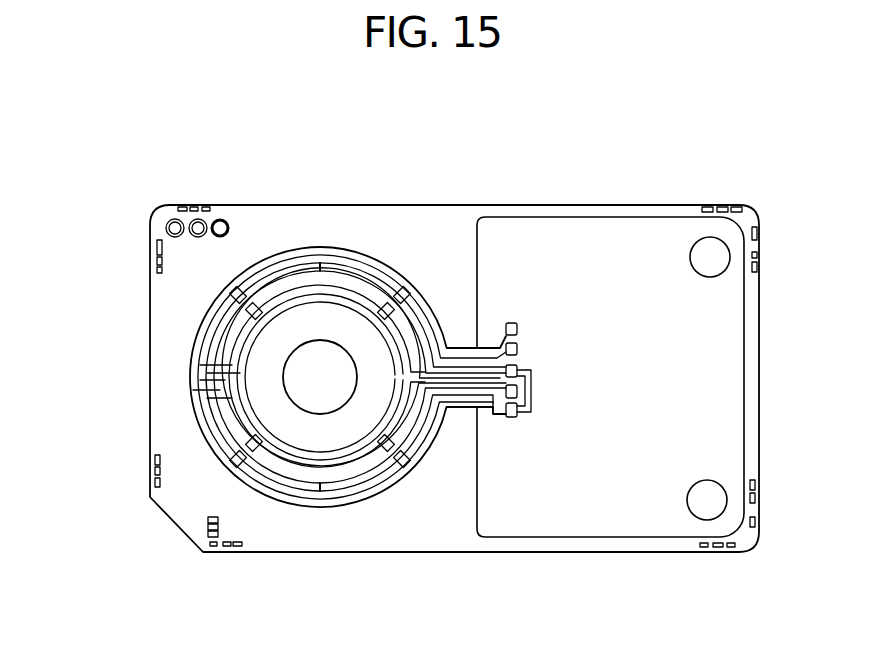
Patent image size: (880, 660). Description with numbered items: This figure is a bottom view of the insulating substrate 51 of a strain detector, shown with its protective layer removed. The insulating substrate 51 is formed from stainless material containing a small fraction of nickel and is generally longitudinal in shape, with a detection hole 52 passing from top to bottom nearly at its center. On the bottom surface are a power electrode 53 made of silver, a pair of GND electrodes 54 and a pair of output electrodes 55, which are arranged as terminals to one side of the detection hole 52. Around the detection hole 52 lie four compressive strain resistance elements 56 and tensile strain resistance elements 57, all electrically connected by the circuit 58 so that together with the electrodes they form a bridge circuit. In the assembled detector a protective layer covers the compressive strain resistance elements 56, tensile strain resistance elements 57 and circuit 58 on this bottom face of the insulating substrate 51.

The insulating substrate 51 is at (170, 307).
The detection hole 52 is at (300, 383).
The power electrode 53 is at (512, 325).
The GND electrode 54 is at (519, 368).
The output electrode 55 is at (515, 348).
The compressive strain resistance element 56 is at (237, 288).
The tensile strain resistance element 57 is at (253, 312).
The circuit 58 is at (418, 300).